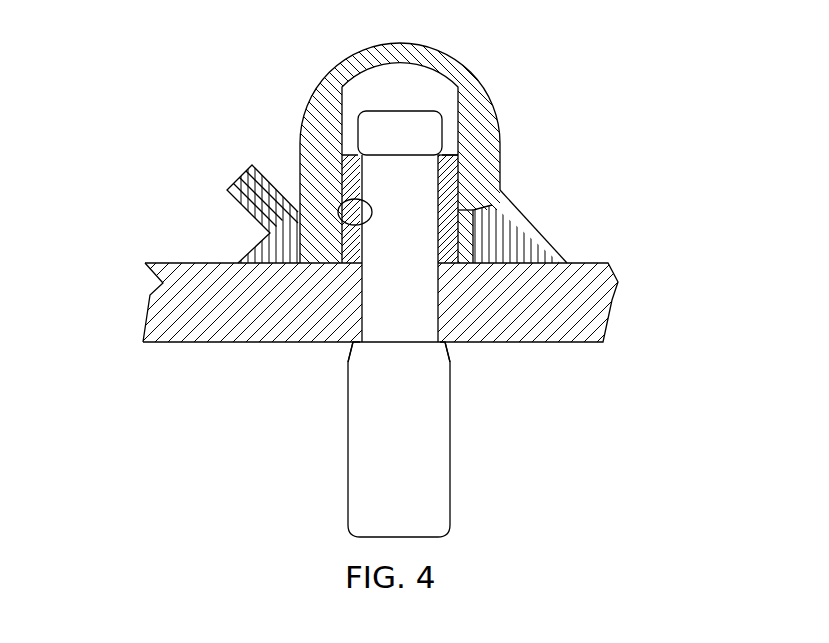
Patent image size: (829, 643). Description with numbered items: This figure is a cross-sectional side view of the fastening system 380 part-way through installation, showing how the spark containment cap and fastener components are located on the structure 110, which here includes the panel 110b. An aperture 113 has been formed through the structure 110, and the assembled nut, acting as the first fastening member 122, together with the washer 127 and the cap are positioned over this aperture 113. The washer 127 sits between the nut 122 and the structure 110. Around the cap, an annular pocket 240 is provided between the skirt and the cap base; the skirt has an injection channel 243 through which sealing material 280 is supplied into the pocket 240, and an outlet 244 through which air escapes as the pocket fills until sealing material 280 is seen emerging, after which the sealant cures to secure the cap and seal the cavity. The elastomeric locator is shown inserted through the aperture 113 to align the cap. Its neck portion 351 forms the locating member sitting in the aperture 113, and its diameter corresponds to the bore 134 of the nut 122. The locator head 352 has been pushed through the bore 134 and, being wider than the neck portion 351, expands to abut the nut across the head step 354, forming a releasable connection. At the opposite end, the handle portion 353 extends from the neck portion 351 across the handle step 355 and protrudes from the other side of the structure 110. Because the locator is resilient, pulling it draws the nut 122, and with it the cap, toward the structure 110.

The structure 110 is at (590, 310).
The panel 110b is at (177, 286).
The aperture 113 is at (443, 312).
The first fastening member 122 is at (447, 220).
The washer 127 is at (445, 260).
The bore 134 is at (340, 222).
The annular pocket 240 is at (515, 228).
The injection channel 243 is at (243, 177).
The outlet 244 is at (557, 240).
The sealing material 280 is at (283, 248).
The neck portion 351 is at (365, 178).
The locator head 352 is at (420, 135).
The handle portion 353 is at (432, 468).
The head step 354 is at (352, 162).
The handle step 355 is at (353, 345).
The fastening system 380 is at (617, 80).